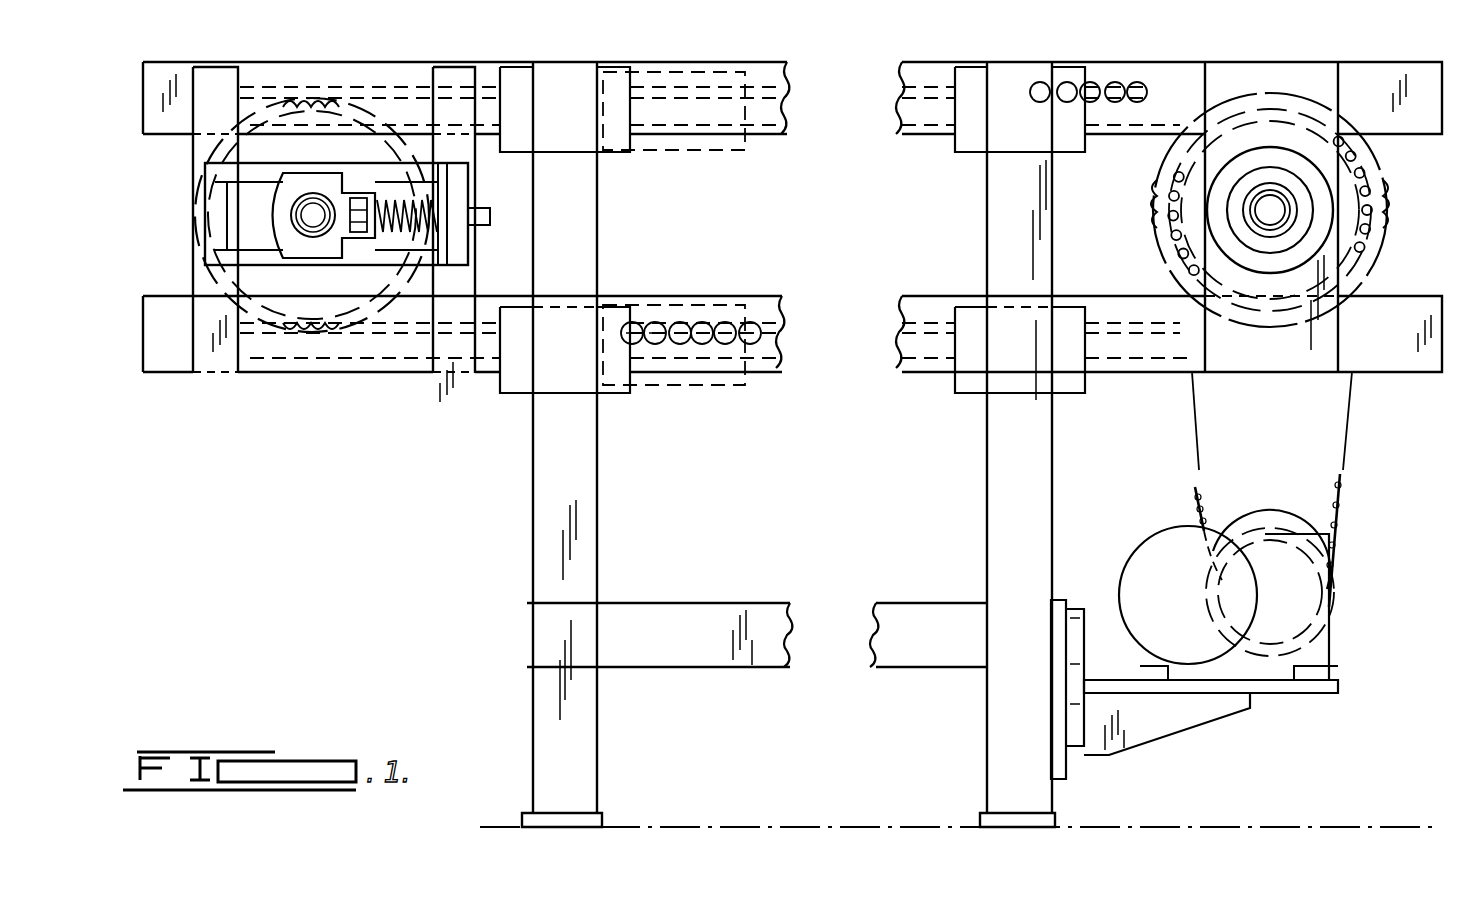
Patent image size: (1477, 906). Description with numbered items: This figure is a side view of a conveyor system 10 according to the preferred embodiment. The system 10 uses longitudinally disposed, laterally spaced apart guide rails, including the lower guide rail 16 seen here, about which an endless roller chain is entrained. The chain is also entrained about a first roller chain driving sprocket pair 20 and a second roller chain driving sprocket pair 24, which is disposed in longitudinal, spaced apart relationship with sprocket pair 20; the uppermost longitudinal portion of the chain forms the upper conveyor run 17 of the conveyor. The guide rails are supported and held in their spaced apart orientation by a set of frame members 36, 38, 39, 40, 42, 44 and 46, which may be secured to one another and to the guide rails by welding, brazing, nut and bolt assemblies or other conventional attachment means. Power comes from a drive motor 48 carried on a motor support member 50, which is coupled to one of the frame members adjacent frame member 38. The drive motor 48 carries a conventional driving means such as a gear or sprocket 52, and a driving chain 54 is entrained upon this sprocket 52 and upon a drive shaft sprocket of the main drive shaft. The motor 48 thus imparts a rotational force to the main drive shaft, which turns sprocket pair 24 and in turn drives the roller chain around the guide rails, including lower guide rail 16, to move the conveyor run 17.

The conveyor system 10 is at (445, 624).
The lower guide rail 16 is at (1125, 378).
The conveyor 17 is at (1080, 52).
The roller chain driving sprocket pair 20 is at (211, 158).
The roller chain driving sprocket pair 24 is at (1409, 215).
The frame member 36 is at (549, 504).
The frame member 38 is at (997, 497).
The frame member 39 is at (566, 177).
The frame member 40 is at (708, 605).
The frame member 42 is at (218, 373).
The frame member 44 is at (450, 373).
The frame member 46 is at (1268, 357).
The drive motor 48 is at (1347, 622).
The motor support member 50 is at (1239, 732).
The gear or sprocket 52 is at (1265, 529).
The driving chain 54 is at (1354, 523).